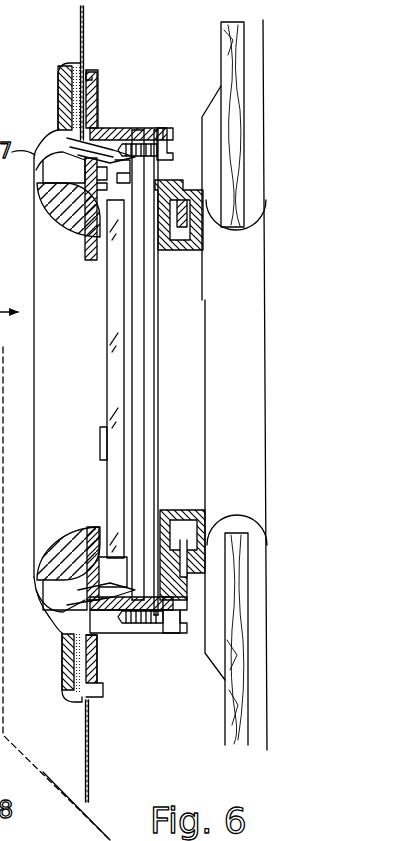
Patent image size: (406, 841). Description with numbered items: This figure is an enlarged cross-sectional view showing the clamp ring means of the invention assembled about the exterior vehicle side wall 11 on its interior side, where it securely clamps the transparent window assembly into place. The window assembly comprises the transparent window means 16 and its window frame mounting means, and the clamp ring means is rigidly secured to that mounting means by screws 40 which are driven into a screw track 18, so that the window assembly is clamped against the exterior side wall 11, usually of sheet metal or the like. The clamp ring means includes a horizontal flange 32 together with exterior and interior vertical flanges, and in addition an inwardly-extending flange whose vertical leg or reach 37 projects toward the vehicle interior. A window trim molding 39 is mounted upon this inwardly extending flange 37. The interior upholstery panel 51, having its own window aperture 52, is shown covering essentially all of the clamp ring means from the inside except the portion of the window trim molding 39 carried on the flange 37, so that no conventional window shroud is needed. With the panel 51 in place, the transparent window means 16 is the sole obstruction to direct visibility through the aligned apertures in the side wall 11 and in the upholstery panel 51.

The vehicle side wall 11 is at (76, 20).
The transparent window means 16 is at (112, 373).
The screw track 18 is at (130, 133).
The horizontal flange 32 is at (110, 127).
The vertical leg or reach 37 is at (190, 212).
The window trim molding 39 is at (193, 311).
The screws 40 is at (170, 128).
The interior upholstery panel 51 is at (267, 145).
The window aperture 52 is at (290, 263).